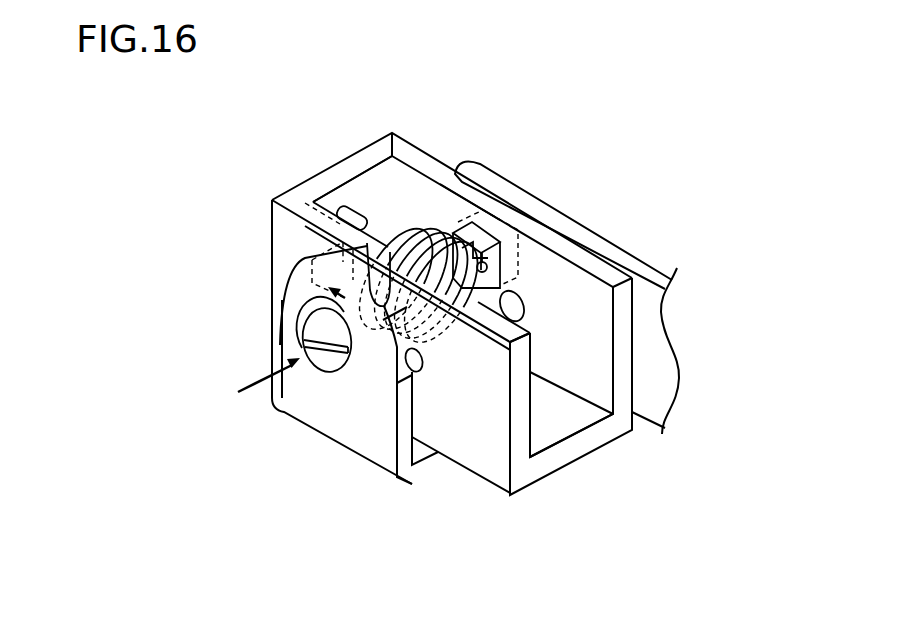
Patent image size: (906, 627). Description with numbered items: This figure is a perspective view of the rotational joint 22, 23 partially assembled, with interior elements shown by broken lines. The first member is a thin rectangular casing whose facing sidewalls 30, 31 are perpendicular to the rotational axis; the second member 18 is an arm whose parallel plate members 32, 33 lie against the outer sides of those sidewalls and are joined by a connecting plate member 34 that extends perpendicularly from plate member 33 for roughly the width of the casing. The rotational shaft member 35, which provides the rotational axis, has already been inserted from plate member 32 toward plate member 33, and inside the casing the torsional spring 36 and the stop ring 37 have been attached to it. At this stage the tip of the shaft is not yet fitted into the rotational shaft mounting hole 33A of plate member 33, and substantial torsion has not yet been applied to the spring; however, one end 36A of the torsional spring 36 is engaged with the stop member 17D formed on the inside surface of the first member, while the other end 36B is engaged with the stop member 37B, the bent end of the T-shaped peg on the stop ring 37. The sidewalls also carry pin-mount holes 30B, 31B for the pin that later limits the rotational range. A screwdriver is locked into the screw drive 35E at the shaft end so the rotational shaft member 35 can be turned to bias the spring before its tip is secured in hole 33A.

The stop member 17D is at (344, 200).
The second member 18 is at (514, 180).
The rotational joint 22 is at (652, 233).
The rotational joint 23 is at (655, 351).
The sidewall 30 is at (479, 428).
The pin-mount hole 30B is at (427, 368).
The sidewall 31 is at (394, 205).
The pin-mount hole 31B is at (514, 288).
The plate member 32 is at (297, 301).
The plate member 33 is at (585, 242).
The rotational shaft mounting hole 33A is at (462, 205).
The connecting plate member 34 is at (416, 462).
The rotational shaft member 35 is at (352, 376).
The screw drive 35E is at (303, 356).
The torsional spring 36 is at (399, 225).
The one end of the torsional spring 36A is at (305, 203).
The other end of the torsional spring 36B is at (493, 263).
The stop ring 37 is at (528, 336).
The stop member 37B is at (490, 267).